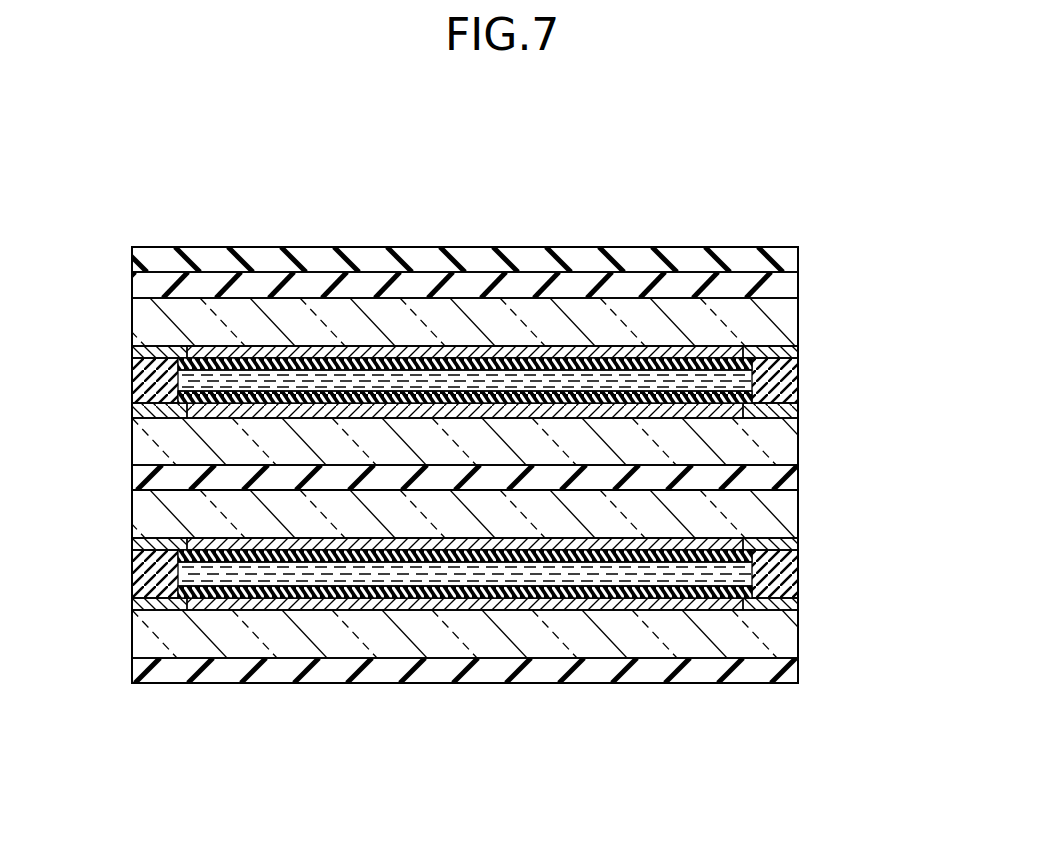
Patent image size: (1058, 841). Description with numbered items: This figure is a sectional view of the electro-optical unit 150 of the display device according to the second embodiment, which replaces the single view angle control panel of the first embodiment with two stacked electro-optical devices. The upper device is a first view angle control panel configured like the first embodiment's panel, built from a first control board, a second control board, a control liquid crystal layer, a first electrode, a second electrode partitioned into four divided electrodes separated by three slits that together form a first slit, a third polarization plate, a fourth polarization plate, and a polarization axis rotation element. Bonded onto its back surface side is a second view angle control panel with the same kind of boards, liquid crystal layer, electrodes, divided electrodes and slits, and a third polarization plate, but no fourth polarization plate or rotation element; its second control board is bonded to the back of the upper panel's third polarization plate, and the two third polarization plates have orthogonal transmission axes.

The electro-optical unit 150 is at (102, 133).